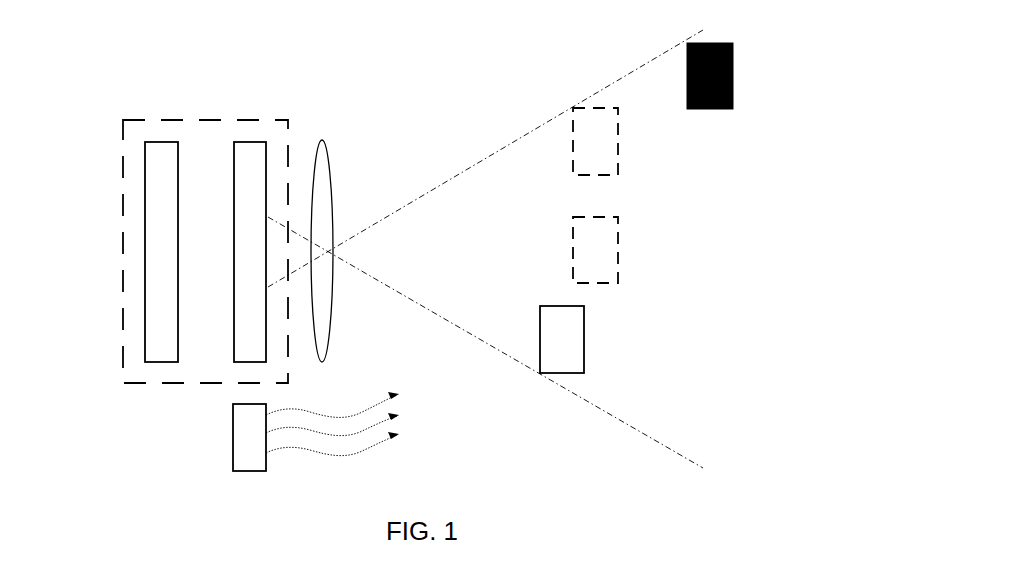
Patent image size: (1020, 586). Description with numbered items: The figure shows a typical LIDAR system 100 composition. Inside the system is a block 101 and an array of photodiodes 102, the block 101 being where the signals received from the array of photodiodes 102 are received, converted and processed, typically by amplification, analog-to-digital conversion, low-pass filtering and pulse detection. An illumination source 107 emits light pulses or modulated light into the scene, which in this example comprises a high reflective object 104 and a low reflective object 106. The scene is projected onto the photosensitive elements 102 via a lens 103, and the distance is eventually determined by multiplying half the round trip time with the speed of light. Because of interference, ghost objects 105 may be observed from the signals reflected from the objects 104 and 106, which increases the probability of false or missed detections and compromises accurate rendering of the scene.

The LIDAR system 100 is at (123, 228).
The block 101 is at (160, 140).
The array of photodiodes 102 is at (248, 140).
The lens 103 is at (323, 140).
The high reflective object 104 is at (584, 345).
The ghost objects 105 is at (618, 139).
The low reflective object 106 is at (733, 83).
The illumination source 107 is at (233, 438).